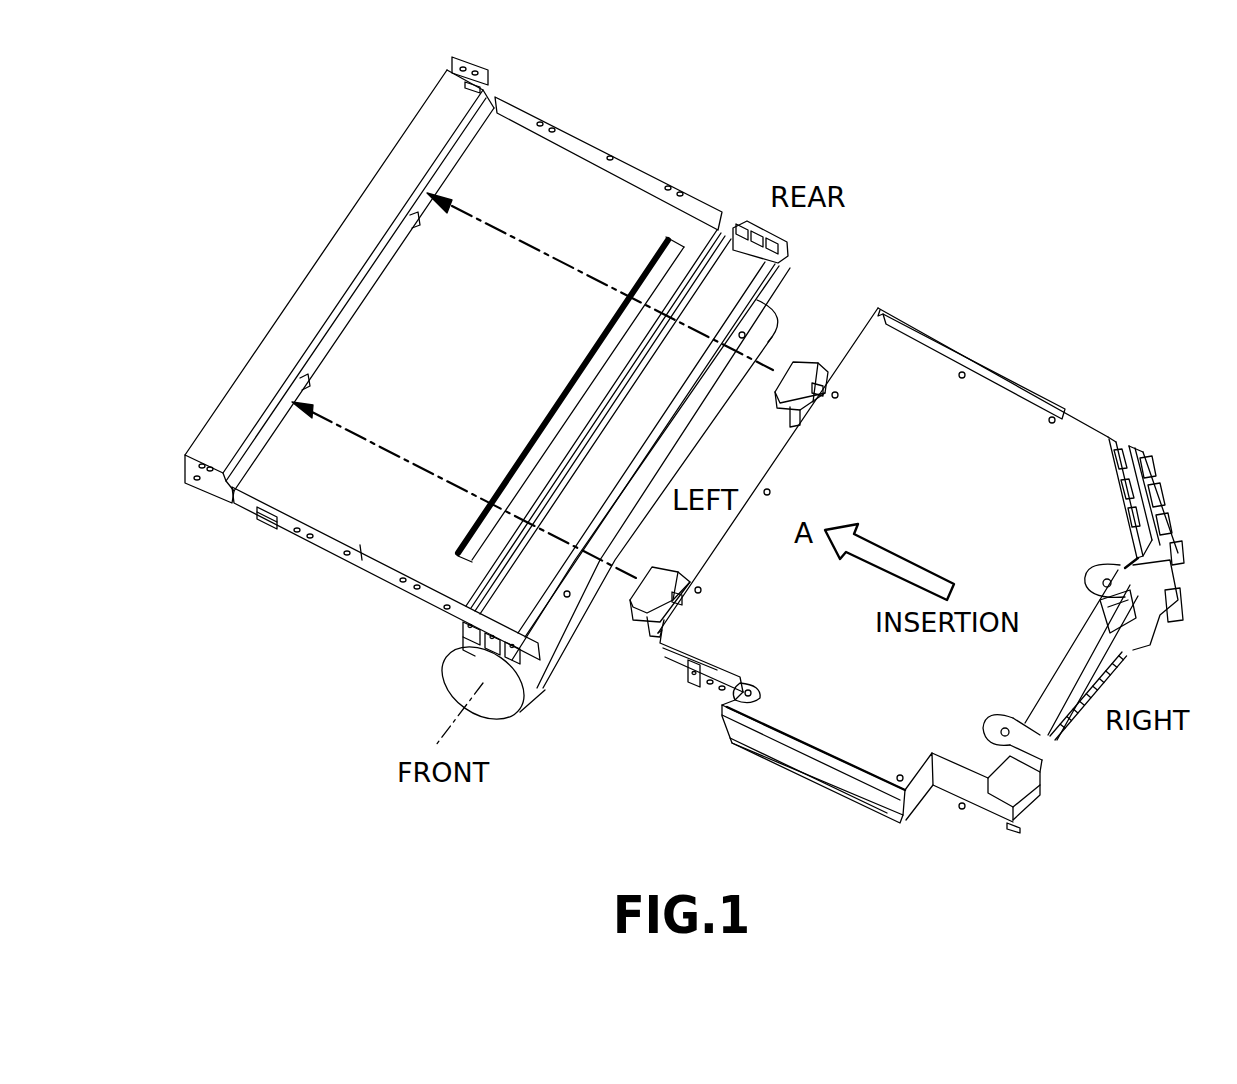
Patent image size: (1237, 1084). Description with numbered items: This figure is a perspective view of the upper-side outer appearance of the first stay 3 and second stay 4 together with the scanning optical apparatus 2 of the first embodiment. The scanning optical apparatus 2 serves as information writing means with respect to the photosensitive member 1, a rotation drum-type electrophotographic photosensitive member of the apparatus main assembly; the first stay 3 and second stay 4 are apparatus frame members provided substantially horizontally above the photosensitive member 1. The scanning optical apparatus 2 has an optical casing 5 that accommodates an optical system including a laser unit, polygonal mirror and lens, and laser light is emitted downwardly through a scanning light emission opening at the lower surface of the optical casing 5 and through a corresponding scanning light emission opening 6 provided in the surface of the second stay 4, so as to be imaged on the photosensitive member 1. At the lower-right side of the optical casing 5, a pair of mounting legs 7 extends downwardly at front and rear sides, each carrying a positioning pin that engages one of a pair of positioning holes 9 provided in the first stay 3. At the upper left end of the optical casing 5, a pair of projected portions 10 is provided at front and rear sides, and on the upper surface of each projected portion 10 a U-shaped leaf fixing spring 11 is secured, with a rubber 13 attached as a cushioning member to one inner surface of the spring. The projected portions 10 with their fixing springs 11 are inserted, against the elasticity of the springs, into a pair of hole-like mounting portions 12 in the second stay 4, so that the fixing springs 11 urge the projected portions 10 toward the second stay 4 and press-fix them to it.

The photosensitive member 1 is at (530, 683).
The scanning optical apparatus 2 is at (1092, 427).
The first stay 3 is at (643, 425).
The second stay 4 is at (360, 537).
The optical casing 5 is at (818, 732).
The scanning light emission opening 6 is at (563, 411).
The mounting leg 7 is at (960, 812).
The positioning hole 9 is at (742, 332).
The projected portion 10 is at (798, 417).
The fixing spring 11 is at (806, 370).
The mounting portion 12 is at (432, 216).
The rubber 13 is at (812, 414).